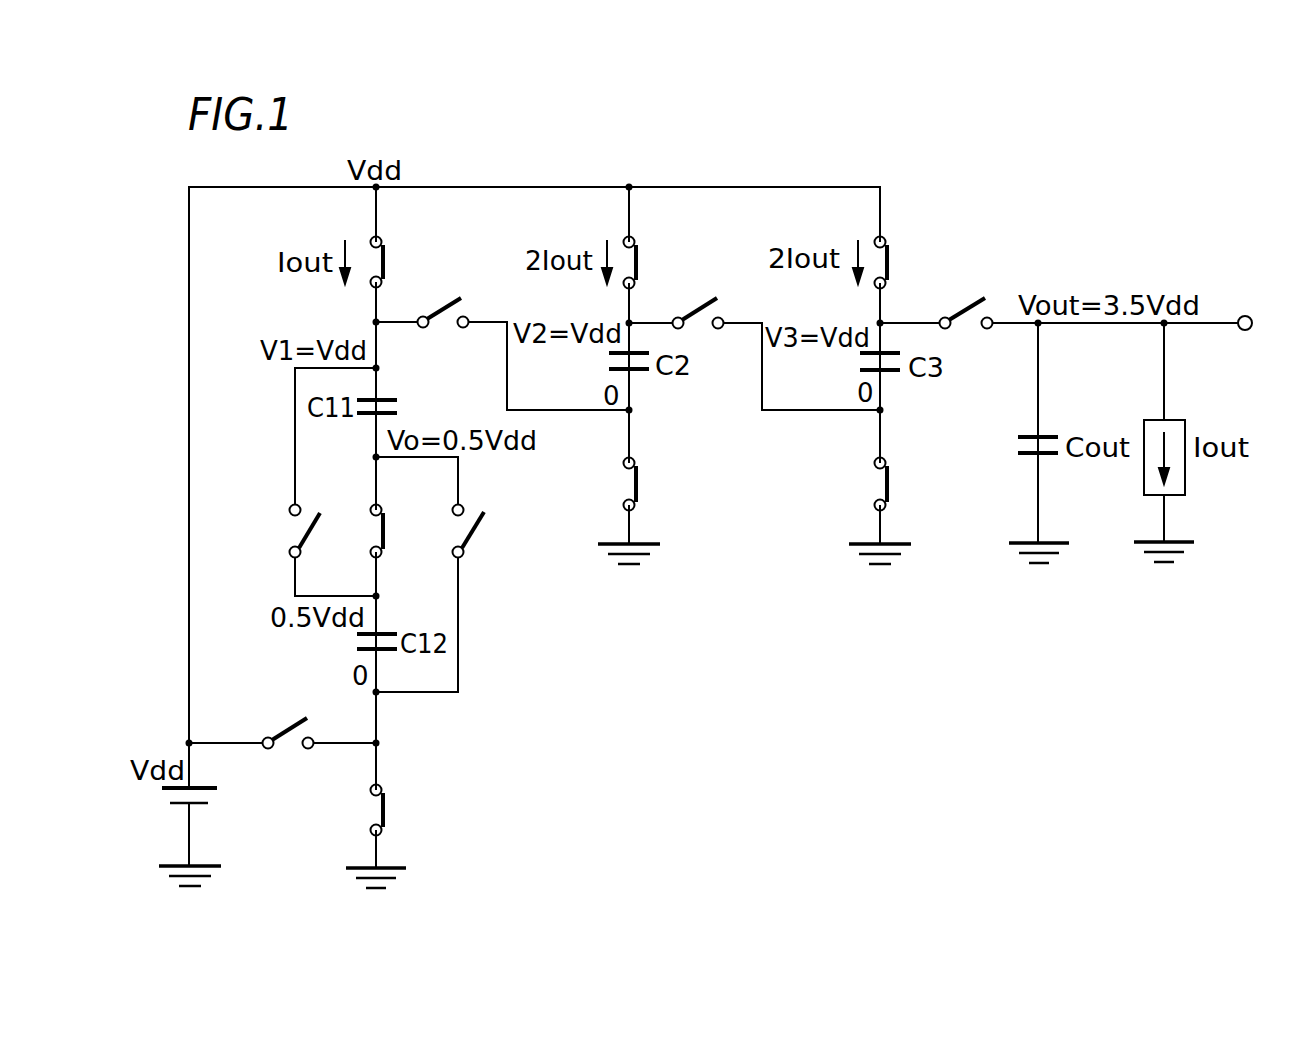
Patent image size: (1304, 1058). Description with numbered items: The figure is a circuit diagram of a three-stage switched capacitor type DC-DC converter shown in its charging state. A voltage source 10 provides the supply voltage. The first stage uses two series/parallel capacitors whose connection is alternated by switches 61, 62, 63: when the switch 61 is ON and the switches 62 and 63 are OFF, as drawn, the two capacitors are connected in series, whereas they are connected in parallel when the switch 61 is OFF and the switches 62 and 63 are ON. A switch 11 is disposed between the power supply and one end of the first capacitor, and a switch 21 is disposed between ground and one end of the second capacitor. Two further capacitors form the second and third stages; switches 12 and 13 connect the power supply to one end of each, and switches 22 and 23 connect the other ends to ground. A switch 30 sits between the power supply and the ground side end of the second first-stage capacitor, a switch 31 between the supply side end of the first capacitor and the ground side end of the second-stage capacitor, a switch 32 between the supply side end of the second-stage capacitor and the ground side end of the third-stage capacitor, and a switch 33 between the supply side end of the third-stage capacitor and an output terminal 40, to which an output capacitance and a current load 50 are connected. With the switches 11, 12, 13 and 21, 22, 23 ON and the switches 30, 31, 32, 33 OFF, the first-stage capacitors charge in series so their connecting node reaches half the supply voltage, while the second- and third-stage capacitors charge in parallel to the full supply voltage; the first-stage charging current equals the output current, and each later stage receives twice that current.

The voltage source 10 is at (214, 803).
The switch 11 is at (392, 257).
The switch 12 is at (645, 257).
The switch 13 is at (896, 257).
The switch 21 is at (395, 813).
The switch 22 is at (647, 487).
The switch 23 is at (898, 487).
The switch 30 is at (288, 755).
The switch 31 is at (437, 335).
The switch 32 is at (705, 335).
The switch 33 is at (962, 335).
The output terminal 40 is at (1243, 315).
The current load 50 is at (1195, 490).
The switch 61 is at (393, 540).
The switch 62 is at (318, 540).
The switch 63 is at (478, 540).